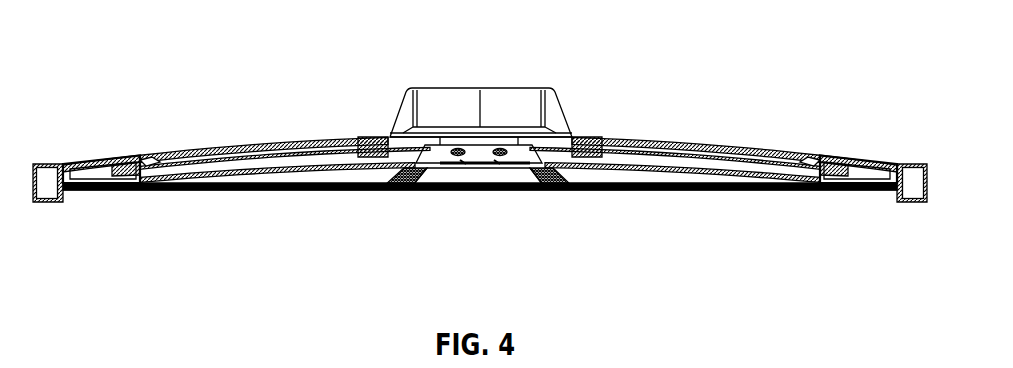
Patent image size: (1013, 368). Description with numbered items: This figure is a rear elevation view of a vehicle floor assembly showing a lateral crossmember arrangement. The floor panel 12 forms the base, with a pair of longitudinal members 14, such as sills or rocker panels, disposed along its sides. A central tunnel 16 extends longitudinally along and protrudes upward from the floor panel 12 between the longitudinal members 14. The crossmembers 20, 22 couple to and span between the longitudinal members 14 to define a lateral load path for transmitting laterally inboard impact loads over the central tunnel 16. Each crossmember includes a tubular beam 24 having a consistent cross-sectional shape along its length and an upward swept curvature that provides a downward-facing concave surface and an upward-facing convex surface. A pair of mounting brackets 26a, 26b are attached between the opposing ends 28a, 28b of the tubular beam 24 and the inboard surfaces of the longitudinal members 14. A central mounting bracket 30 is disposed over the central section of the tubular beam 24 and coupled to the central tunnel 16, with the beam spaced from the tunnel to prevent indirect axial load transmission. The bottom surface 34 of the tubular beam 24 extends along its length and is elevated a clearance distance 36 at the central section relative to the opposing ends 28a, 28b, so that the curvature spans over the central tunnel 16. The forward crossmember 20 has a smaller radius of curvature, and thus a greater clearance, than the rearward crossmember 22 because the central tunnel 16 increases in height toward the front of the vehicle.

The floor panel 12 is at (200, 186).
The longitudinal members 14 is at (50, 200).
The central tunnel 16 is at (530, 97).
The forward swept crossmember 20 is at (633, 138).
The rearward swept crossmember 22 is at (710, 152).
The tubular beam 24 is at (317, 158).
The mounting bracket 26a is at (883, 160).
The mounting bracket 26b is at (82, 161).
The end of tubular beam 28a is at (815, 155).
The end of tubular beam 28b is at (153, 156).
The central mounting bracket 30 is at (480, 152).
The bottom surface 34 is at (299, 170).
The clearance distance 36 is at (480, 177).